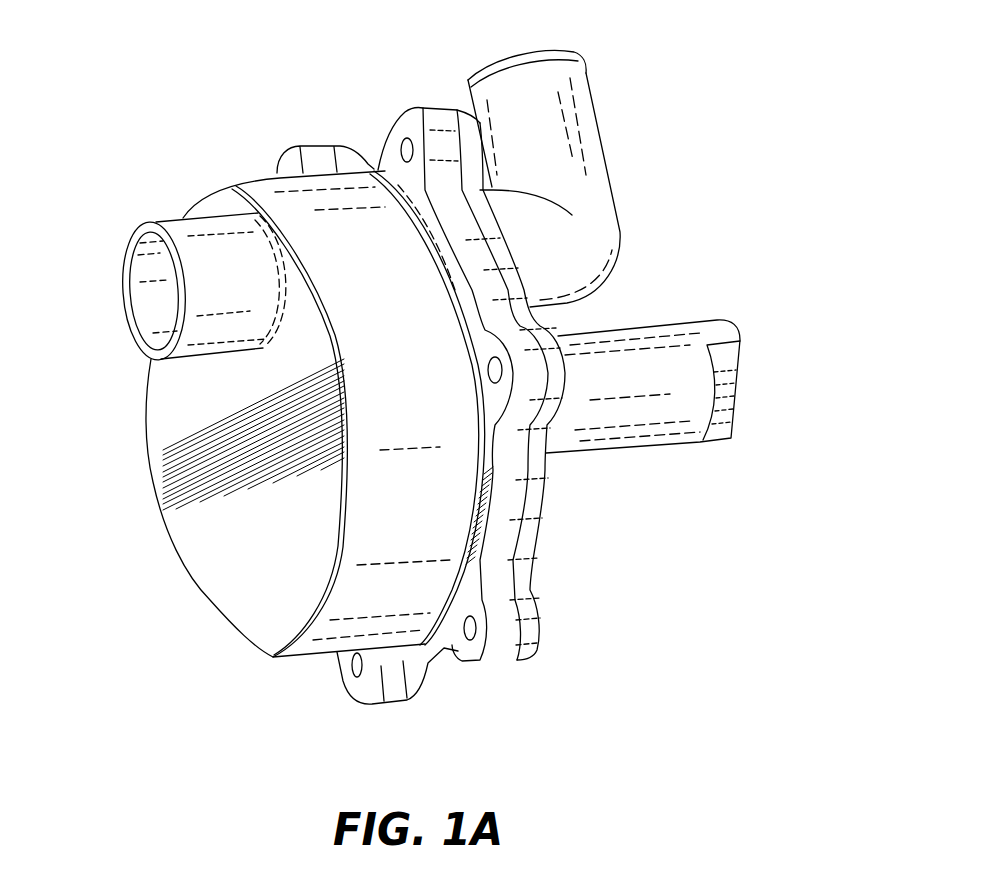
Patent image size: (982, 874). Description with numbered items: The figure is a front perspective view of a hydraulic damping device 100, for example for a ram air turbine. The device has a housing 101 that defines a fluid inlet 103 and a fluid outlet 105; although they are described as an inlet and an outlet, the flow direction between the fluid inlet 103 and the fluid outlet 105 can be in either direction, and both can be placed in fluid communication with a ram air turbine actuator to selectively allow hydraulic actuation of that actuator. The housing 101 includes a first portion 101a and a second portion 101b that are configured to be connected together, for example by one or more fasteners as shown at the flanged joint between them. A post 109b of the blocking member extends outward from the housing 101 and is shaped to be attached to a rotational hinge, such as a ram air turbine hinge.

The hydraulic damping device 100 is at (158, 98).
The housing 101 is at (538, 662).
The first portion 101a is at (215, 553).
The second portion 101b is at (534, 527).
The fluid inlet 103 is at (582, 132).
The fluid outlet 105 is at (138, 262).
The post 109b is at (664, 354).